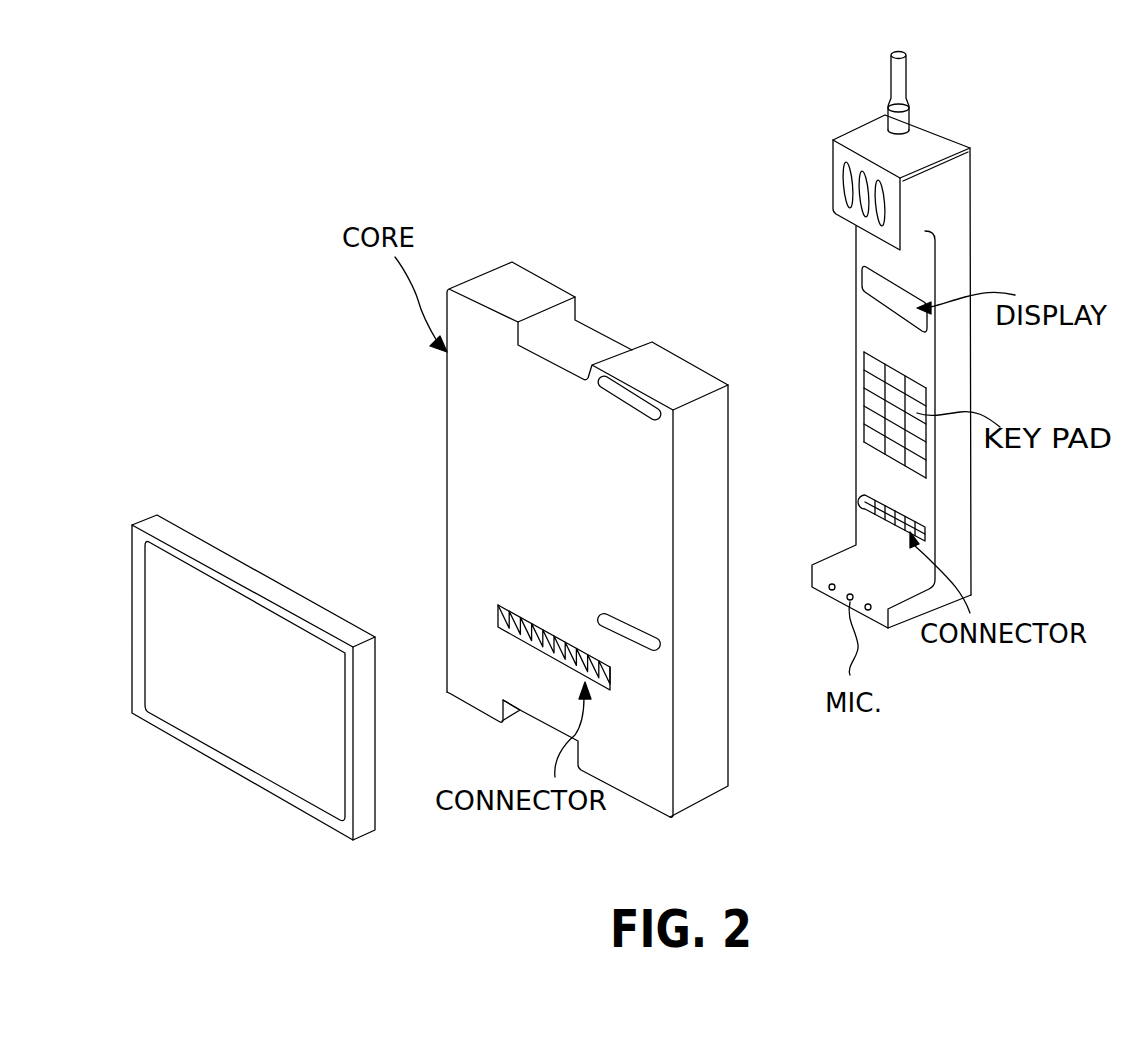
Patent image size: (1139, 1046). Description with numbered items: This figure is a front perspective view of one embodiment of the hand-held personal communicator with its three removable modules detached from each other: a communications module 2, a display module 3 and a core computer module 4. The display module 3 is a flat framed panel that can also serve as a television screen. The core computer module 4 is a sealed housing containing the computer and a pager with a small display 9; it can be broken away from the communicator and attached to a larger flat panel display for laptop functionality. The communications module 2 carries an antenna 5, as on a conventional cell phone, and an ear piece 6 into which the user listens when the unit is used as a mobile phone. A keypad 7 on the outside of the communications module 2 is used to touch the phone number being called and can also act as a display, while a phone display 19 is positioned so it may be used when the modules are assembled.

The communications module 2 is at (968, 212).
The display module 3 is at (262, 579).
The core computer module 4 is at (713, 463).
The antenna 5 is at (902, 80).
The ear piece 6 is at (837, 173).
The keypad 7 is at (910, 393).
The small display 9 is at (624, 400).
The phone display 19 is at (873, 283).